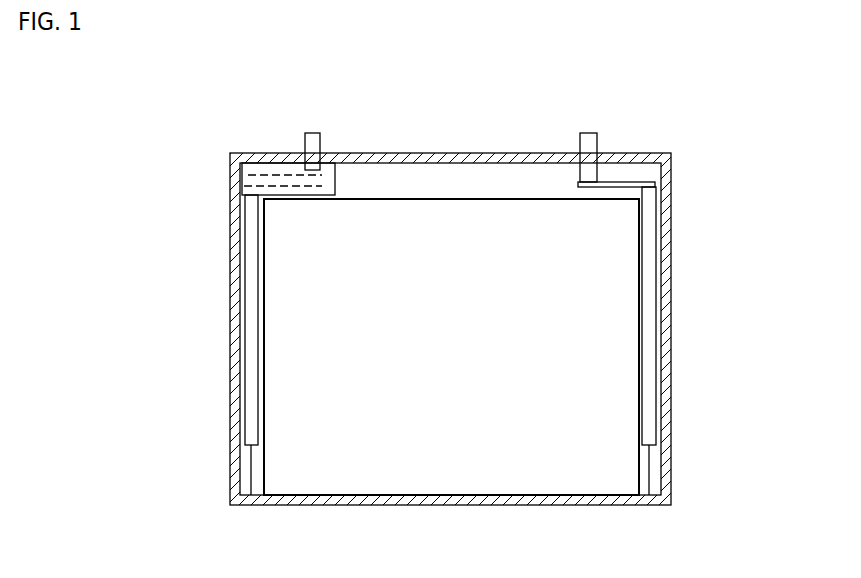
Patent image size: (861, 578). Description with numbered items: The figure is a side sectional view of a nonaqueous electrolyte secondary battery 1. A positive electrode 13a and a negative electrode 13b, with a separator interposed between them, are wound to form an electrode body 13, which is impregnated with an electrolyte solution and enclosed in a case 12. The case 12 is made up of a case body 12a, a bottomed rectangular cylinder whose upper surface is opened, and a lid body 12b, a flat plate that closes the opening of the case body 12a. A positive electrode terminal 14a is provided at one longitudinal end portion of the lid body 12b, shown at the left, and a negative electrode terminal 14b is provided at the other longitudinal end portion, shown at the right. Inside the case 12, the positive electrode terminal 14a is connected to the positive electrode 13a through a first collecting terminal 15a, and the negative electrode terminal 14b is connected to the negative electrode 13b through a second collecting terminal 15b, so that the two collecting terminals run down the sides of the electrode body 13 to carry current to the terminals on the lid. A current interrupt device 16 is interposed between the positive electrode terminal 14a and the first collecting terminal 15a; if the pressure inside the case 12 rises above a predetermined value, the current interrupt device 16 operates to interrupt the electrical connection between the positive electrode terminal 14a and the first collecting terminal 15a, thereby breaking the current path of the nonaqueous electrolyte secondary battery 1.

The nonaqueous electrolyte secondary battery 1 is at (648, 113).
The case 12 is at (489, 297).
The case body 12a is at (671, 373).
The lid body 12b is at (522, 153).
The electrode body 13 is at (453, 198).
The positive electrode 13a is at (252, 484).
The negative electrode 13b is at (648, 484).
The positive electrode terminal 14a is at (311, 133).
The negative electrode terminal 14b is at (587, 133).
The first collecting terminal 15a is at (250, 288).
The second collecting terminal 15b is at (650, 288).
The current interrupt device 16 is at (337, 178).